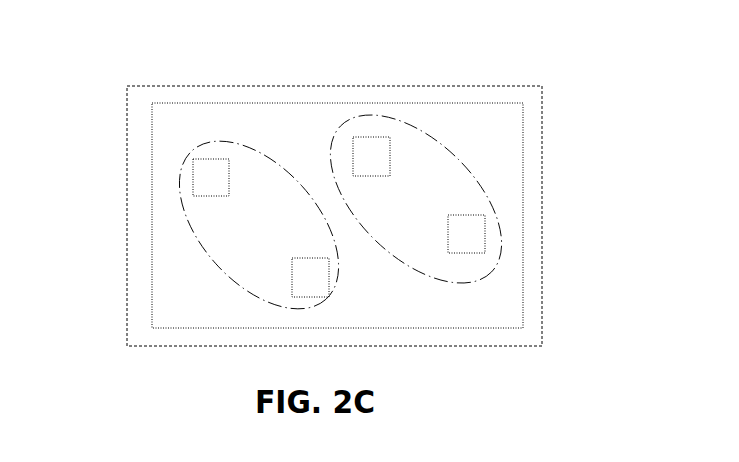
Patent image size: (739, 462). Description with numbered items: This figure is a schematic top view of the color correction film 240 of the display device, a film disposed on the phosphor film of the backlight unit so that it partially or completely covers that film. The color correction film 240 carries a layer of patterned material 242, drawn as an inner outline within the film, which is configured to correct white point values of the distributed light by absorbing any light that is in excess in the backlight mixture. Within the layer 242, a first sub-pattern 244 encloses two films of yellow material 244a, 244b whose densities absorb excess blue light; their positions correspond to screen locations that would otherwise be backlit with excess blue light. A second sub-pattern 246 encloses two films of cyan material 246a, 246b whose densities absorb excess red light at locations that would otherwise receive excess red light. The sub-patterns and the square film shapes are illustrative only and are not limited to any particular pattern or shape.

The color correction film 240 is at (133, 84).
The layer of patterned material 242 is at (507, 103).
The sub-pattern 244 is at (217, 255).
The film of yellow material 244a is at (200, 178).
The film of yellow material 244b is at (305, 285).
The sub-pattern 246 is at (470, 165).
The film of cyan material 246a is at (375, 155).
The film of cyan material 246b is at (472, 243).